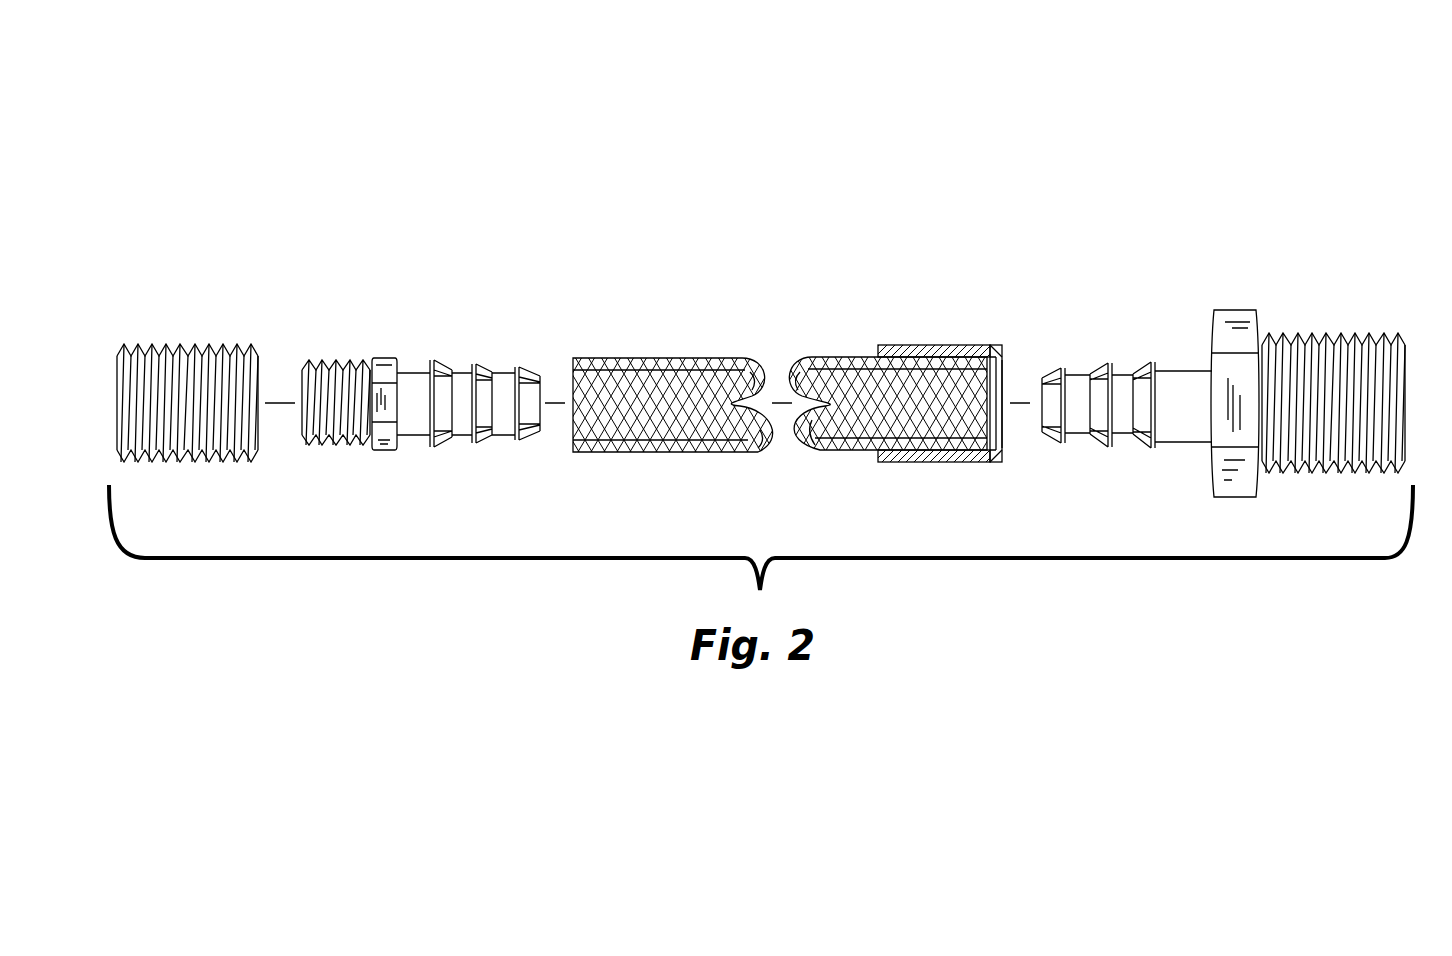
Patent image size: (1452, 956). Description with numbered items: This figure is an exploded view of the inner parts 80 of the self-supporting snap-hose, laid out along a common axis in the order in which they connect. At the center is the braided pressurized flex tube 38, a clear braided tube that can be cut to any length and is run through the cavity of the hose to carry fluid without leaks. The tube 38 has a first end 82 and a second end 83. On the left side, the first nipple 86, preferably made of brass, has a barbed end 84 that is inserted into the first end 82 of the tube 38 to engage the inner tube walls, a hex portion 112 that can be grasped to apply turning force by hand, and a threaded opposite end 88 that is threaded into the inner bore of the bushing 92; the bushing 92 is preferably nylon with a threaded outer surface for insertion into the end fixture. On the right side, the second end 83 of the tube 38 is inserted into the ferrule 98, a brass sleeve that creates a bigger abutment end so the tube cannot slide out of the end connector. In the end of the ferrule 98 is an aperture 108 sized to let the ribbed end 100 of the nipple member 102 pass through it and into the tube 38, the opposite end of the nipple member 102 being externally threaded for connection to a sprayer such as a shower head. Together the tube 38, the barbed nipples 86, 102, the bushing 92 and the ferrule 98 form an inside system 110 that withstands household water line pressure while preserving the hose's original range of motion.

The inner parts 80 is at (1248, 167).
The braided pressurized flex tube 38 is at (832, 357).
The first end of the tube 82 is at (572, 375).
The second end of the tube 83 is at (990, 347).
The barbed end 84 is at (522, 435).
The first nipple 86 is at (395, 356).
The threaded opposite end 88 is at (318, 466).
The bushing 92 is at (175, 345).
The ferrule 98 is at (1003, 355).
The ribbed end 100 is at (1113, 440).
The nipple member 102 is at (1225, 310).
The aperture 108 is at (1018, 432).
The inside system 110 is at (662, 584).
The hex portion 112 is at (408, 455).